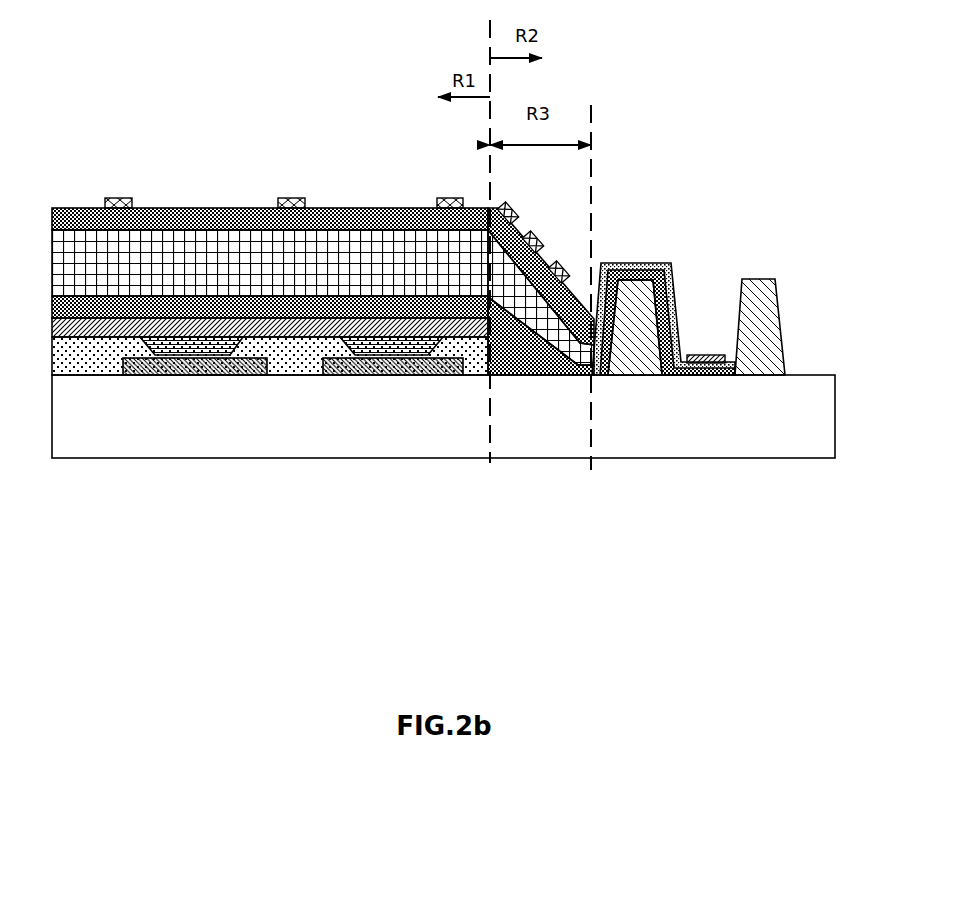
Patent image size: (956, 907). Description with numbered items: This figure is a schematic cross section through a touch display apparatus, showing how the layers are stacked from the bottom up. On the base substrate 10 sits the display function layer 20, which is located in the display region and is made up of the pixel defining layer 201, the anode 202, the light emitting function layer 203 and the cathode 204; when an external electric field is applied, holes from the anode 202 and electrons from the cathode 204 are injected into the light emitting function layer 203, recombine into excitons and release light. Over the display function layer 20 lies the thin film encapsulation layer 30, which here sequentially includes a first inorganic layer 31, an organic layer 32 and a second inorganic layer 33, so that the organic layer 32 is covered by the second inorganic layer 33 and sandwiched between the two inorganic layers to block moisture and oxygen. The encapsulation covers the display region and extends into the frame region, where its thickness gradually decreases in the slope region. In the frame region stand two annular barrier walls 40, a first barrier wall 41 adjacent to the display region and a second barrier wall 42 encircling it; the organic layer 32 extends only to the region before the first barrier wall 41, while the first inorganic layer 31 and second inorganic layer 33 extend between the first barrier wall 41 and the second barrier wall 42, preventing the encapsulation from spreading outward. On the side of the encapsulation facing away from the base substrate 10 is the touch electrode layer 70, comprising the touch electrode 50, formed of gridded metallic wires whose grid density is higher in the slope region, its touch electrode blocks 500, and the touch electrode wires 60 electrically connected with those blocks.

The base substrate 10 is at (148, 420).
The display function layer 20 is at (270, 449).
The pixel defining layer 201 is at (295, 365).
The anode 202 is at (352, 367).
The light emitting function layer 203 is at (407, 340).
The cathode 204 is at (467, 330).
The thin film encapsulation layer 30 is at (323, 210).
The first inorganic layer 31 is at (140, 300).
The organic layer 32 is at (192, 265).
The second inorganic layer 33 is at (120, 100).
The annular barrier wall 40 is at (696, 245).
The first barrier wall 41 is at (640, 313).
The second barrier wall 42 is at (760, 275).
The touch electrode 50 is at (542, 371).
The touch electrode block 500 is at (550, 272).
The touch electrode wire 60 is at (687, 355).
The touch electrode layer 70 is at (611, 399).